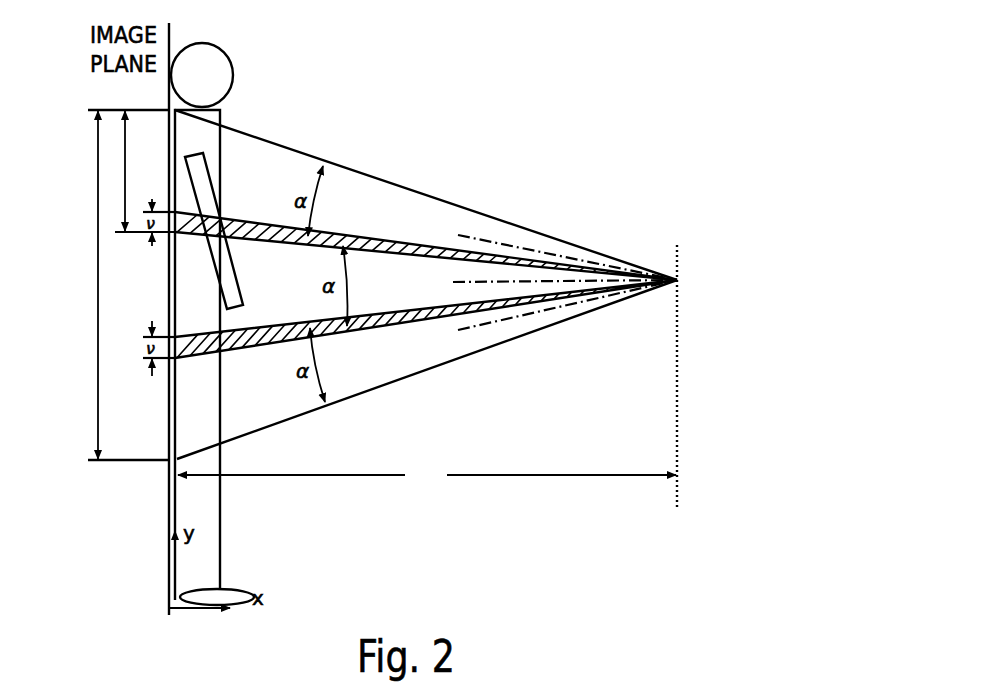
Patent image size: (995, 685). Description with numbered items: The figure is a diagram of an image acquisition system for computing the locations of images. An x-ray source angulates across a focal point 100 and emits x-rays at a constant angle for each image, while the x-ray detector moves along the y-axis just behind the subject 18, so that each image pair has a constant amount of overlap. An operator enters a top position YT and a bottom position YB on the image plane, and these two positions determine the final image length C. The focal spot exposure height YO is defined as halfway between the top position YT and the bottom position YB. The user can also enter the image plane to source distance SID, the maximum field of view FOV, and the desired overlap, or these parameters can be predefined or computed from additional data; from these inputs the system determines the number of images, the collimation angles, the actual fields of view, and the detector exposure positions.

The subject 18 is at (247, 104).
The focal point 100 is at (688, 375).
The top position YT is at (113, 116).
The bottom position YB is at (113, 459).
The focal spot exposure height YO is at (711, 287).
The final image length C is at (83, 285).
The maximum field of view FOV is at (127, 171).
The image plane to source distance SID is at (427, 477).